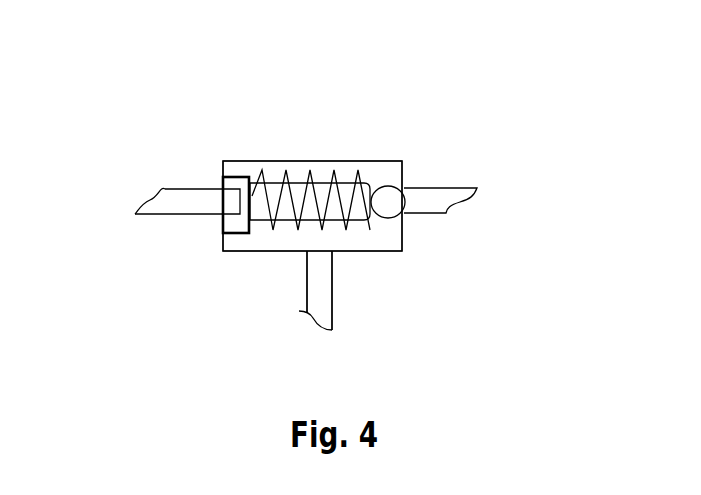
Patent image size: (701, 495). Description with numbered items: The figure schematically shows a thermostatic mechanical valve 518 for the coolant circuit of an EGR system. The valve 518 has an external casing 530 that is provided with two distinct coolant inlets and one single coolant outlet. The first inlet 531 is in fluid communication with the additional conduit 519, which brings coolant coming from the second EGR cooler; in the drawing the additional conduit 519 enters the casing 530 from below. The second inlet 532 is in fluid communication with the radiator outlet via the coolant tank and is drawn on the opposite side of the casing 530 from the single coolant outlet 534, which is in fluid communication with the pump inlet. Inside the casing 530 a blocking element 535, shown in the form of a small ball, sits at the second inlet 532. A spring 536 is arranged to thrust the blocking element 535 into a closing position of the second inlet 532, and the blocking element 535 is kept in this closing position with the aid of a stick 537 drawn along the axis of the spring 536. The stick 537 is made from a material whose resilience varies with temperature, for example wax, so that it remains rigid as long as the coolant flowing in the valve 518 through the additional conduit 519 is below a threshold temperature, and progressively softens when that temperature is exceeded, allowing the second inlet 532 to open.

The valve 518 is at (240, 106).
The additional conduit 519 is at (307, 277).
The external casing 530 is at (267, 251).
The first inlet 531 is at (327, 251).
The second inlet 532 is at (403, 213).
The coolant outlet 534 is at (220, 208).
The blocking element 535 is at (402, 187).
The spring 536 is at (287, 171).
The stick 537 is at (345, 193).